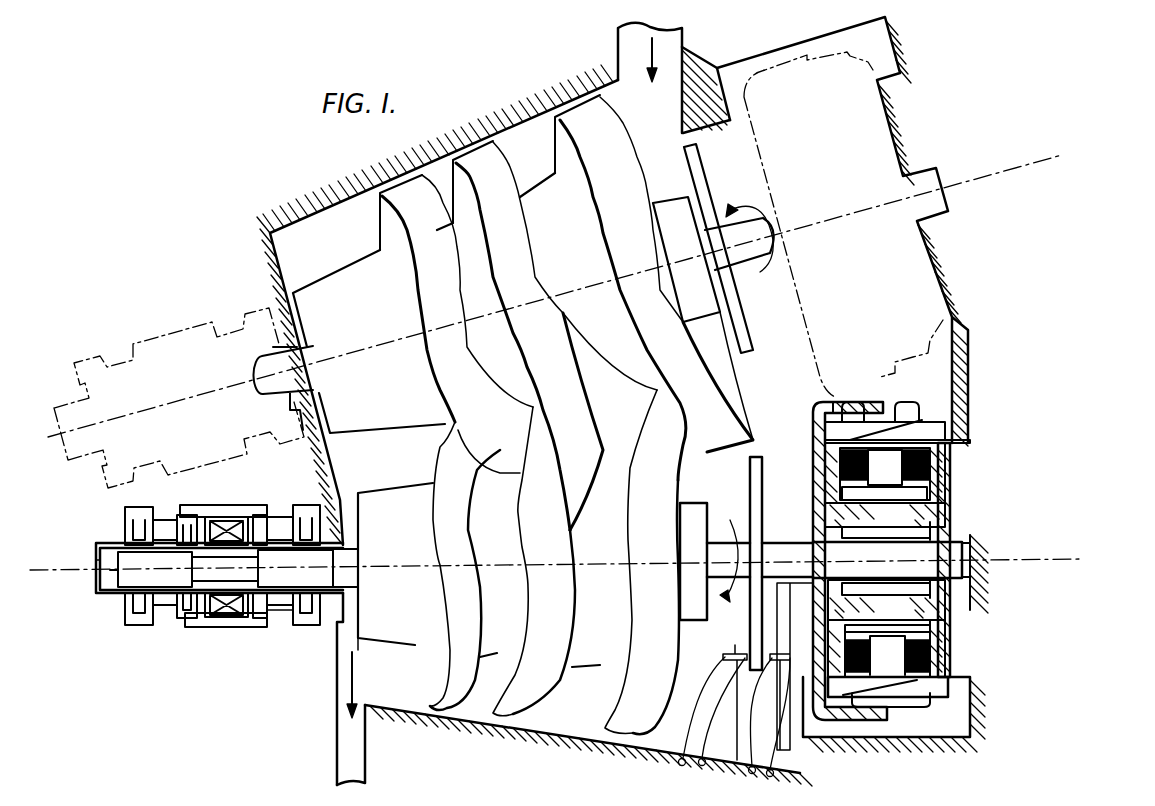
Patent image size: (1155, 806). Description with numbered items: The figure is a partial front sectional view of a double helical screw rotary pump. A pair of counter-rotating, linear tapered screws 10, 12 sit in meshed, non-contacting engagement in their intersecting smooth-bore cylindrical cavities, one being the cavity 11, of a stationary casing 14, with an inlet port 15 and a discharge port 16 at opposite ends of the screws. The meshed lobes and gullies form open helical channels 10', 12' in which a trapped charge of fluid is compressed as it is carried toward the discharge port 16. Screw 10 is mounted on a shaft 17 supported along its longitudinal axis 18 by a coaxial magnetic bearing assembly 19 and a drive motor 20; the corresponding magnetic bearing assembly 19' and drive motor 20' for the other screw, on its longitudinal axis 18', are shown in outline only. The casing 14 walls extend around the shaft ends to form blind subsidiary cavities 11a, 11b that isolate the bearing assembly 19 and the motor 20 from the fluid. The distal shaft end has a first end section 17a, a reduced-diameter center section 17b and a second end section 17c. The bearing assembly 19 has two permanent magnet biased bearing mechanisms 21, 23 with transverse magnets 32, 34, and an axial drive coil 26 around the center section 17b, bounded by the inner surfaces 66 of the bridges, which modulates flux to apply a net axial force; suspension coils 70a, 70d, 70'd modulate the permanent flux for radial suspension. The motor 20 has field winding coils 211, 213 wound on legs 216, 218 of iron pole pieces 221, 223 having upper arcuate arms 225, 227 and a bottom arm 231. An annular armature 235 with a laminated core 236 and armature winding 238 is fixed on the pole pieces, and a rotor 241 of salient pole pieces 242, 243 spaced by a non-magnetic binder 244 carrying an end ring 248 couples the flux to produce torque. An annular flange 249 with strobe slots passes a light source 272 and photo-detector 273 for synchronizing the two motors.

The linear tapered screw 10 is at (518, 575).
The open helical channel 10' is at (554, 562).
The smooth-bore cylindrical cavity 11 is at (392, 676).
The blind subsidiary cavity 11a is at (100, 582).
The blind subsidiary cavity 11b is at (985, 560).
The linear tapered screw 12 is at (533, 288).
The open helical channel 12' is at (566, 312).
The stationary casing 14 is at (418, 712).
The inlet port 15 is at (683, 48).
The discharge port 16 is at (366, 770).
The shaft 17 is at (833, 571).
The first end section 17a is at (172, 584).
The center section 17b is at (245, 584).
The second end section 17c is at (325, 584).
The longitudinal axis 18 is at (566, 551).
The longitudinal axis 18' is at (555, 286).
The magnetic bearing assembly 19 is at (199, 592).
The magnetic bearing assembly 19' is at (183, 398).
The drive motor 20 is at (1109, 609).
The drive motor 20' is at (842, 231).
The permanent magnet biased bearing mechanism 21 is at (176, 640).
The permanent magnet biased bearing mechanism 23 is at (288, 652).
The axial drive coil 26 is at (228, 618).
The magnets 32 is at (164, 635).
The magnets 34 is at (288, 614).
The inner surface of bridge 66 is at (203, 628).
The suspension coil 70a is at (125, 510).
The suspension coil 70d is at (138, 628).
The suspension coil 70'd is at (304, 595).
The field winding coil 211 is at (930, 527).
The field winding coil 213 is at (930, 583).
The leg 216 is at (905, 521).
The leg 218 is at (905, 614).
The pole piece 221 is at (950, 492).
The pole piece 223 is at (948, 620).
The upper arcuate arm 225 is at (942, 455).
The upper arcuate arm 227 is at (940, 658).
The bottom arm 231 is at (823, 500).
The annular armature 235 is at (935, 432).
The armature core 236 is at (893, 458).
The armature winding 238 is at (928, 470).
The rotor 241 is at (948, 700).
The salient pole piece 242 is at (950, 438).
The salient pole piece 243 is at (822, 398).
The non-magnetic binder 244 is at (892, 455).
The end ring 248 is at (852, 402).
The annular flange 249 is at (748, 470).
The light source 272 is at (718, 657).
The photo-detector 273 is at (728, 757).